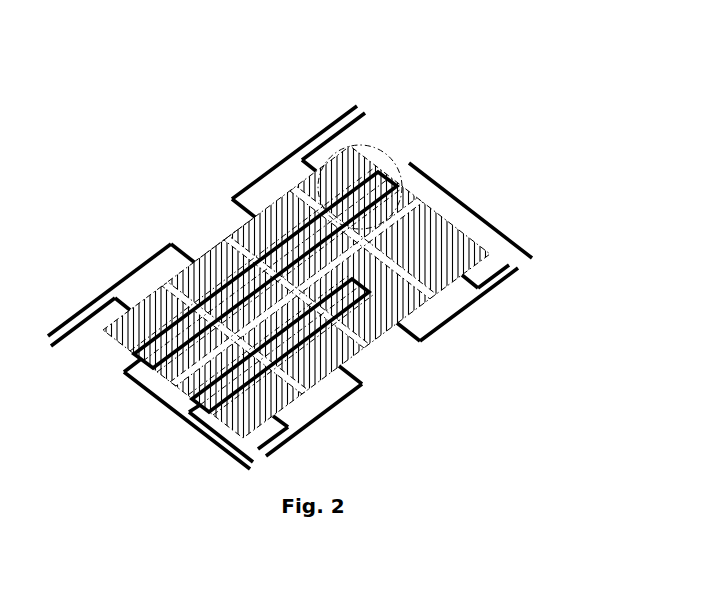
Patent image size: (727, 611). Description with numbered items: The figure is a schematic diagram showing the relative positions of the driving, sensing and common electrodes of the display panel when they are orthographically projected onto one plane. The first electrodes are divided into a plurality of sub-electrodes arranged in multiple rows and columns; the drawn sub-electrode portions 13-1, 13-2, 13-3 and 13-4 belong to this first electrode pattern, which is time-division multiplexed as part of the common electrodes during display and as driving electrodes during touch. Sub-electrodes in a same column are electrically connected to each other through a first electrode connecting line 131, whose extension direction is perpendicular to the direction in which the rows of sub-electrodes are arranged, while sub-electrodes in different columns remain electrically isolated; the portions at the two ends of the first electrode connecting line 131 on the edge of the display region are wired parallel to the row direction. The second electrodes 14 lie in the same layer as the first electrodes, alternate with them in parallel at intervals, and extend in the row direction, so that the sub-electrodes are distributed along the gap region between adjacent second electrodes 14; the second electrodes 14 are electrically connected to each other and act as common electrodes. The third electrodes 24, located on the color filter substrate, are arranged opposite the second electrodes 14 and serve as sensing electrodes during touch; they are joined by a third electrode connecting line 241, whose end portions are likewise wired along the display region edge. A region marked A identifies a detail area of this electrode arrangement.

The second electrode 14 is at (440, 213).
The third electrode 24 is at (237, 223).
The third electrode connecting line 241 is at (497, 230).
The first lead portion 13-1 is at (93, 318).
The first electrode connecting line 131 is at (137, 265).
The second lead portion 13-2 is at (205, 257).
The third lead portion 13-3 is at (272, 200).
The fourth lead portion 13-4 is at (362, 142).
The detail region A is at (388, 163).